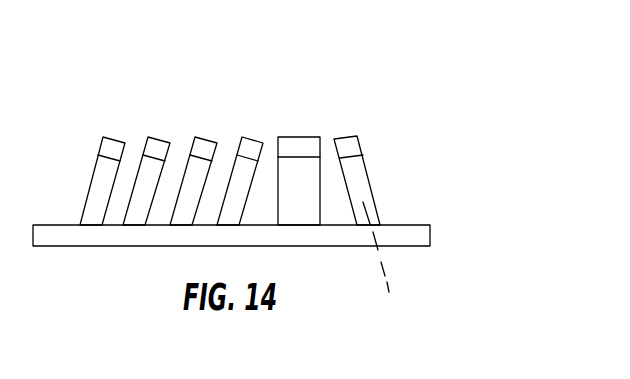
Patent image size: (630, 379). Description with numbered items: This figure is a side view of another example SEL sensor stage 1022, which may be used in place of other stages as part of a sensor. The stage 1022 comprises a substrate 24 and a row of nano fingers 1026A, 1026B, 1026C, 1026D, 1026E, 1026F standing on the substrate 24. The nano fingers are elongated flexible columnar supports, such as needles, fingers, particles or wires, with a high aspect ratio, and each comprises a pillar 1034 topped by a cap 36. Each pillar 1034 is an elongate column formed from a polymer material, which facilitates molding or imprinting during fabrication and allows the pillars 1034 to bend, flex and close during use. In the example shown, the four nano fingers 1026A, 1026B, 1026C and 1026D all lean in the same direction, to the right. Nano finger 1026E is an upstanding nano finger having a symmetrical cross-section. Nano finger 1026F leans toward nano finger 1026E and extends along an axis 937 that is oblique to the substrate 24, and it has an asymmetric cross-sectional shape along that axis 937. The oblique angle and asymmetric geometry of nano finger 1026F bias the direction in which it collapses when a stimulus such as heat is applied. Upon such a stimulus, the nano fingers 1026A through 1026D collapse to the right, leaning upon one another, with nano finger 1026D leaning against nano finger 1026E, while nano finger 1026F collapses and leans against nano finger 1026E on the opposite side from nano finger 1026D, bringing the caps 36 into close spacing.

The SEL sensor stage 1022 is at (415, 72).
The substrate 24 is at (431, 224).
The nano finger 1026A is at (100, 148).
The nano finger 1026B is at (143, 147).
The nano finger 1026C is at (194, 146).
The nano finger 1026D is at (252, 139).
The nano finger 1026E is at (305, 137).
The nano finger 1026F is at (347, 138).
The cap 36 is at (115, 140).
The pillar 1034 is at (88, 193).
The axis 937 is at (385, 277).